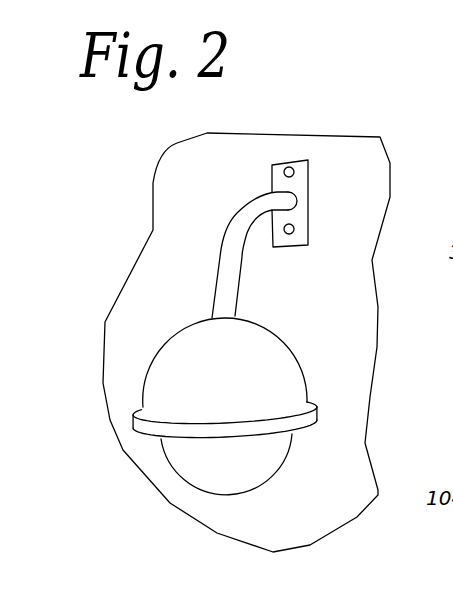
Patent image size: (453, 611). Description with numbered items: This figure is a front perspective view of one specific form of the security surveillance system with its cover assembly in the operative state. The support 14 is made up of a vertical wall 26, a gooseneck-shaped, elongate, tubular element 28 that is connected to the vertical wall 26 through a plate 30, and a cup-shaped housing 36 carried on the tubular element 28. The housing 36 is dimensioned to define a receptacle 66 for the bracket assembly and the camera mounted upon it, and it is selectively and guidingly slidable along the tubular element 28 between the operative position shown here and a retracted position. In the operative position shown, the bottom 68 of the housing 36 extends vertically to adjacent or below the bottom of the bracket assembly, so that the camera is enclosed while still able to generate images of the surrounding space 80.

The support 14 is at (167, 242).
The vertical wall 26 is at (346, 204).
The tubular element 28 is at (233, 228).
The plate 30 is at (308, 170).
The housing 36 is at (163, 366).
The receptacle 66 is at (287, 390).
The bottom of the housing 68 is at (303, 433).
The surrounding space 80 is at (142, 452).